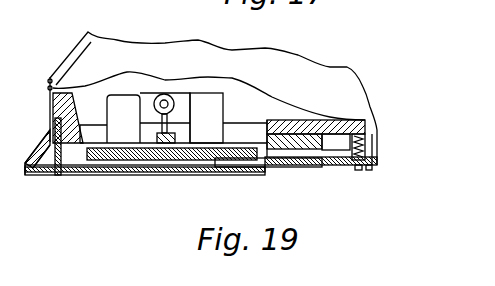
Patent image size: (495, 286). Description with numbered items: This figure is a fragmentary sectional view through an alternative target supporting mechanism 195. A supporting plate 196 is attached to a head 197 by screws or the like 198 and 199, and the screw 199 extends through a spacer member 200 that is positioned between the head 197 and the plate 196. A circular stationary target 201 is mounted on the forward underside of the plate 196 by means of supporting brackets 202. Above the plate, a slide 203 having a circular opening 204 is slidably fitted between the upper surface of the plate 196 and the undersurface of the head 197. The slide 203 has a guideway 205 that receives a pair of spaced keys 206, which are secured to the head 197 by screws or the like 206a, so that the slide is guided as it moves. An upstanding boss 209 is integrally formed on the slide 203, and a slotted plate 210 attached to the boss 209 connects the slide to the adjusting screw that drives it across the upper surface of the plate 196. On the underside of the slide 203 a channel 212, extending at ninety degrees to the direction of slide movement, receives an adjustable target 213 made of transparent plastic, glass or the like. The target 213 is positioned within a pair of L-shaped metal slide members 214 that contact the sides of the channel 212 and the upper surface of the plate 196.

The target supporting mechanism 195 is at (117, 182).
The supporting plate 196 is at (357, 170).
The head 197 is at (118, 47).
The screw 198 is at (370, 170).
The screw 199 is at (60, 180).
The spacer member 200 is at (65, 137).
The circular stationary target 201 is at (176, 172).
The supporting brackets 202 is at (78, 180).
The slide 203 is at (305, 150).
The circular opening 204 is at (240, 143).
The guideway 205 is at (237, 98).
The keys 206 is at (193, 140).
The screw 206a is at (180, 96).
The boss 209 is at (121, 96).
The slotted plate 210 is at (160, 73).
The channel 212 is at (293, 150).
The adjustable target 213 is at (133, 158).
The L-shaped slide members 214 is at (218, 175).